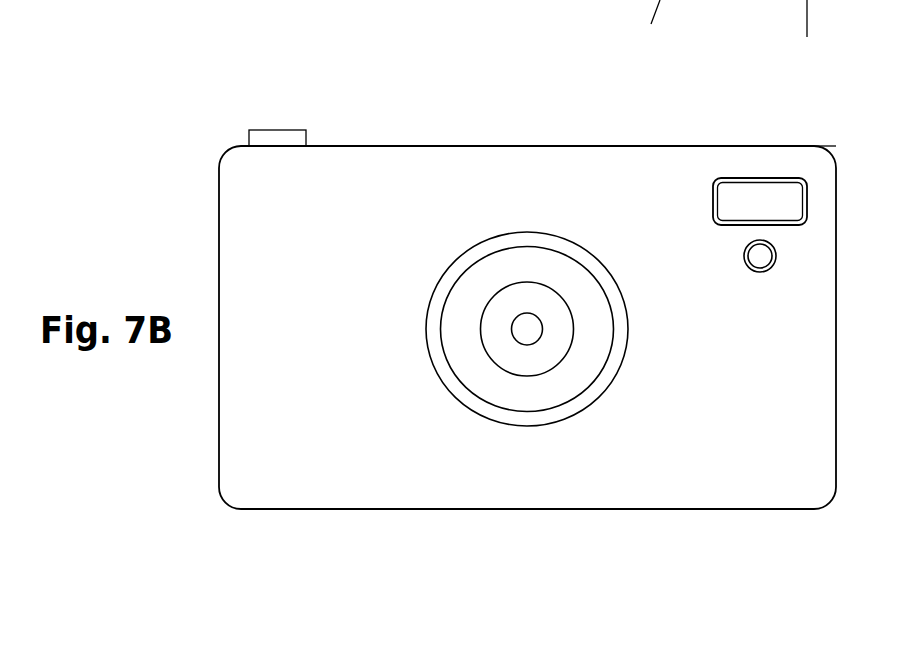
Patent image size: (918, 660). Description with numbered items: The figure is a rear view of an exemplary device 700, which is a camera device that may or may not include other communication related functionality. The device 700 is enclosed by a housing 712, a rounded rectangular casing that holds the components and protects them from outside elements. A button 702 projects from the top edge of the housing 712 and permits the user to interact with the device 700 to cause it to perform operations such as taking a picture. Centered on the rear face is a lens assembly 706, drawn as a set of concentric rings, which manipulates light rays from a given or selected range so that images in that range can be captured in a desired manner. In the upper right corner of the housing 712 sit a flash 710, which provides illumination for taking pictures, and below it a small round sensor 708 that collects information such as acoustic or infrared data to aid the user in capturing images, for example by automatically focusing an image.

The device 700 is at (431, 80).
The button 702 is at (286, 130).
The lens assembly 706 is at (580, 245).
The sensors 708 is at (706, 155).
The flash 710 is at (728, 178).
The housing 712 is at (807, 146).